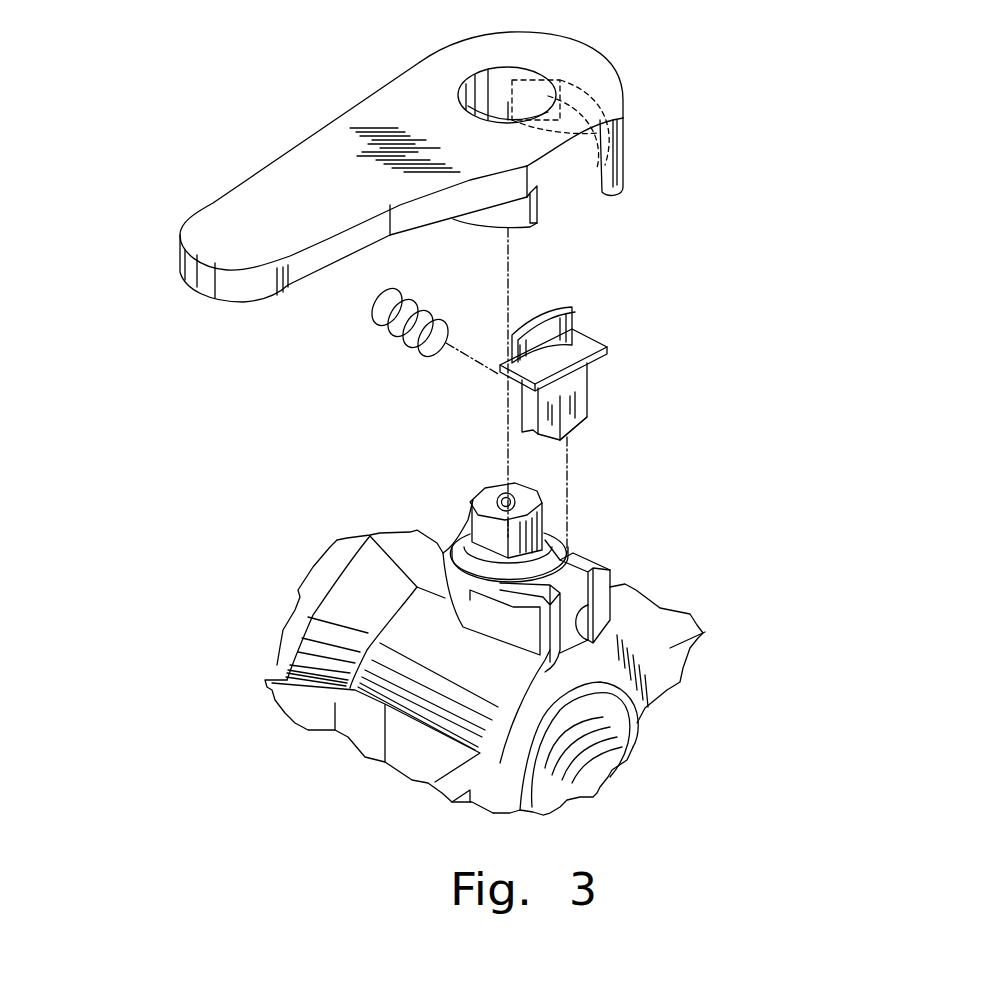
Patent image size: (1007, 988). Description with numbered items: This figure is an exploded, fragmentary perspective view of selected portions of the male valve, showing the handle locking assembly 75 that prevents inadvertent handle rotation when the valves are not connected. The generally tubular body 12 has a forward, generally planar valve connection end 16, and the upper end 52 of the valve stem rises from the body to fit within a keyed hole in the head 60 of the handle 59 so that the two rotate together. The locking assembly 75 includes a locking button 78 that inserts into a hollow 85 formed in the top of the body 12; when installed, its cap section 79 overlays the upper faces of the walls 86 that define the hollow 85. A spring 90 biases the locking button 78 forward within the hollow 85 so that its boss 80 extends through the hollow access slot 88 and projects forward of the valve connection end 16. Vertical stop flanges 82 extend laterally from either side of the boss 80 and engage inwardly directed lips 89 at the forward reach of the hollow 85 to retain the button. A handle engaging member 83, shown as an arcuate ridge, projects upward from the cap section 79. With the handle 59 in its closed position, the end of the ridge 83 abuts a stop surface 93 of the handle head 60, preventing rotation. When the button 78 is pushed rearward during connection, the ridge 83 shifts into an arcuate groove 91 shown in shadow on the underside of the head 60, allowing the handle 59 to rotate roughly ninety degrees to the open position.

The body 12 is at (362, 735).
The valve connection end 16 is at (655, 674).
The upper end of stem 52 is at (482, 518).
The handle 59 is at (255, 162).
The head of handle 60 is at (578, 63).
The handle locking assembly 75 is at (812, 445).
The locking button 78 is at (634, 360).
The cap section 79 is at (583, 344).
The boss 80 is at (573, 437).
The vertical stop flanges 82 is at (533, 413).
The handle engaging member 83 is at (553, 322).
The hollow 85 is at (550, 588).
The walls 86 is at (590, 552).
The hollow access slot 88 is at (622, 618).
The inwardly directed lips 89 is at (597, 580).
The spring 90 is at (393, 334).
The arcuate recess or groove 91 is at (620, 92).
The surface 93 is at (620, 190).